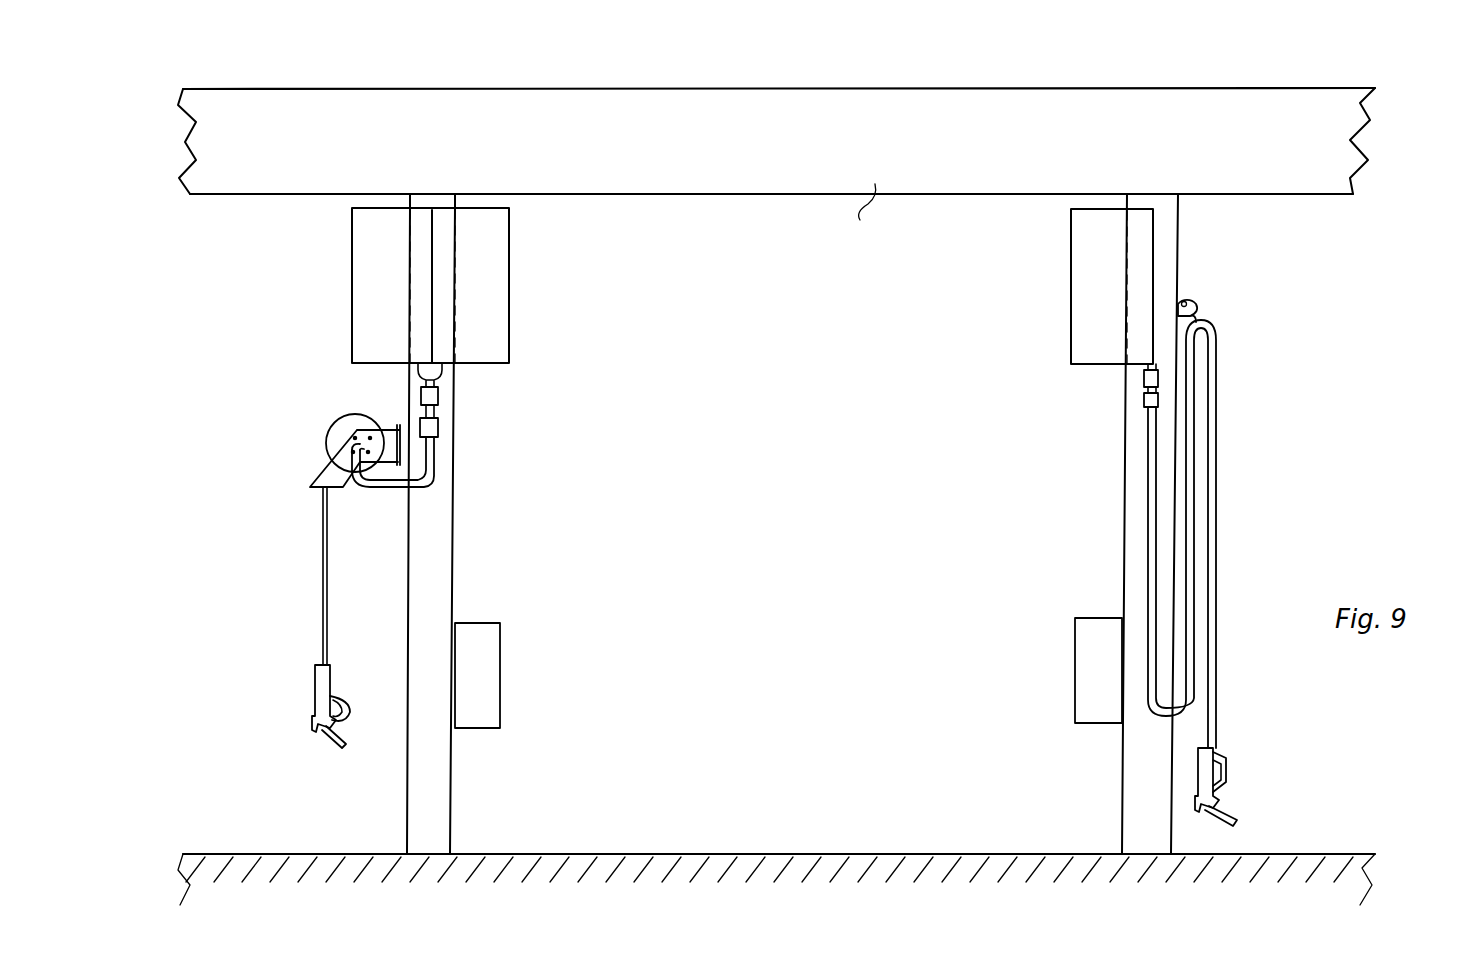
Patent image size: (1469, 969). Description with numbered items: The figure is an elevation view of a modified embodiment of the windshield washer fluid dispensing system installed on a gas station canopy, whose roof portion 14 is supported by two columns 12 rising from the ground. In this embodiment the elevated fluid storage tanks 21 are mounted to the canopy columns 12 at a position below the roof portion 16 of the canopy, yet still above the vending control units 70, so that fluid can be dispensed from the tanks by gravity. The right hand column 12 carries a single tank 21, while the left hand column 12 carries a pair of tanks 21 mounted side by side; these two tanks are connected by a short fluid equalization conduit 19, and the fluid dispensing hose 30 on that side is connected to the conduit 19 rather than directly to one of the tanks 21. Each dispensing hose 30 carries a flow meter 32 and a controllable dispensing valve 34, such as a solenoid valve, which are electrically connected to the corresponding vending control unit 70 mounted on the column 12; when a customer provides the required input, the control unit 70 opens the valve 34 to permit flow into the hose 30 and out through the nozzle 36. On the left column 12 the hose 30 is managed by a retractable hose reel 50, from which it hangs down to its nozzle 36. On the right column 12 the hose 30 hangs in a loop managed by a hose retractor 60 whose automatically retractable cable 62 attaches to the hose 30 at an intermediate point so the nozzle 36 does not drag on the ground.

The column 12 is at (458, 522).
The roof portion 14 is at (880, 74).
The roof portion 16 is at (862, 216).
The fluid equalization conduit 19 is at (444, 374).
The elevated fluid storage tank 21 is at (352, 270).
The fluid dispensing hose 30 is at (442, 468).
The flow meter 32 is at (440, 394).
The controllable dispensing valve 34 is at (440, 430).
The nozzle 36 is at (313, 684).
The hose reel 50 is at (332, 458).
The hose retractor 60 is at (1196, 292).
The retractable cable 62 is at (1198, 318).
The vending control unit 70 is at (502, 628).